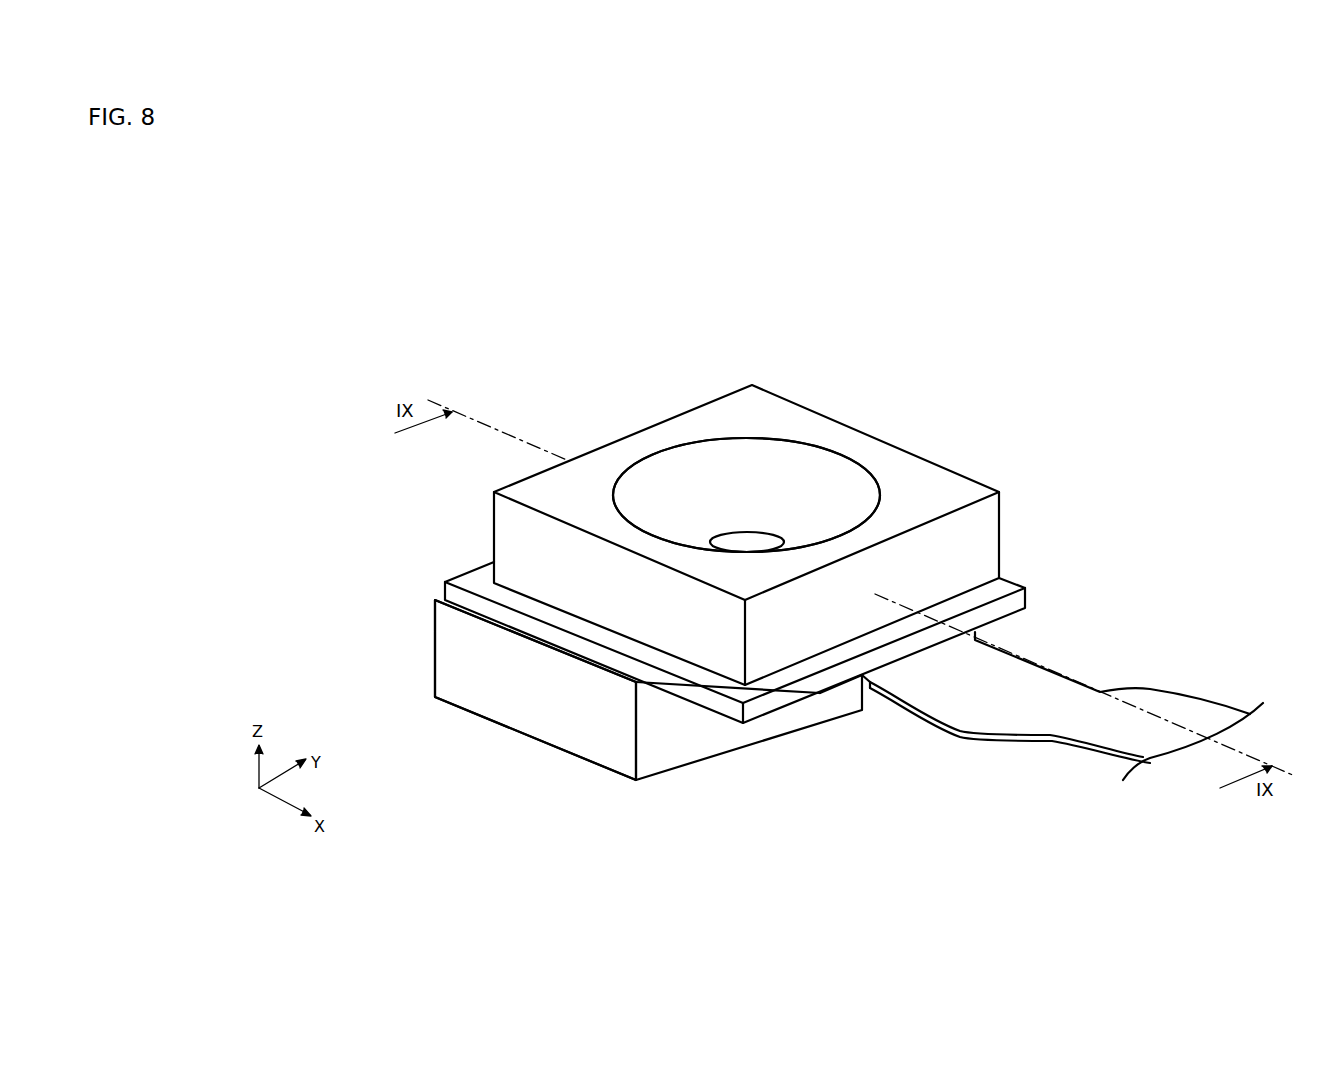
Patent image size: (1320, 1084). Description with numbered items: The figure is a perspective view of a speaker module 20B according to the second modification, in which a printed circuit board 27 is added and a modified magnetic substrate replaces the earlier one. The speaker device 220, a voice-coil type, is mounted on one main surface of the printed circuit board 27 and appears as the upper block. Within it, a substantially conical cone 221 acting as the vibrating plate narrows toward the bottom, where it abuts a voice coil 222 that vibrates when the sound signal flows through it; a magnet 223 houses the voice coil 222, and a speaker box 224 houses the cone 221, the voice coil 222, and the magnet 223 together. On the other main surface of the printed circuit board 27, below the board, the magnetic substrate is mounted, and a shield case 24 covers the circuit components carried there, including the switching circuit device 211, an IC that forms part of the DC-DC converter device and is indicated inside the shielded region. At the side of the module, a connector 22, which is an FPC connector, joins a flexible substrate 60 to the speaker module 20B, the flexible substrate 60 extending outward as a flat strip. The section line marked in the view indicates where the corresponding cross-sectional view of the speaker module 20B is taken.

The speaker module 20B is at (809, 519).
The speaker device 220 is at (756, 520).
The cone 221 is at (746, 463).
The voice coil 222 is at (795, 469).
The magnet 223 is at (766, 477).
The speaker box 224 is at (756, 492).
The printed circuit board 27 is at (761, 622).
The flexible substrate 60 is at (1062, 704).
The connector 22 is at (786, 727).
The shield case 24 is at (809, 690).
The switching circuit device 211 is at (526, 690).